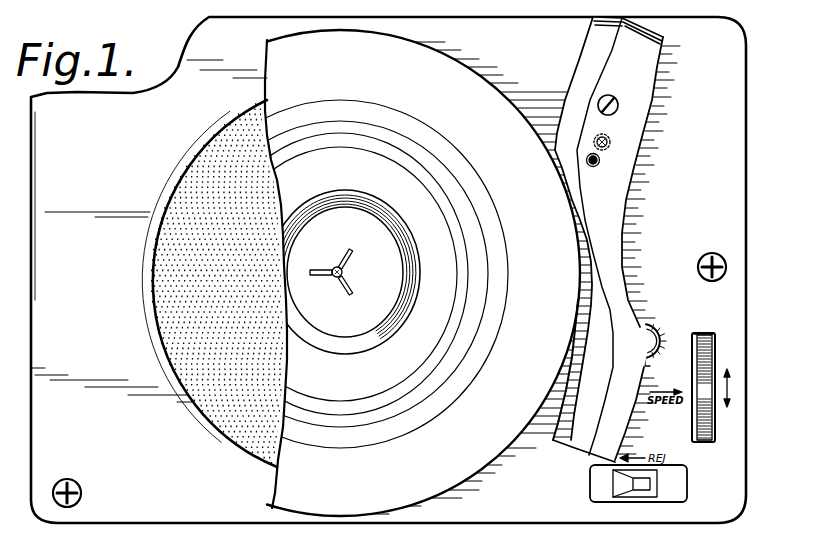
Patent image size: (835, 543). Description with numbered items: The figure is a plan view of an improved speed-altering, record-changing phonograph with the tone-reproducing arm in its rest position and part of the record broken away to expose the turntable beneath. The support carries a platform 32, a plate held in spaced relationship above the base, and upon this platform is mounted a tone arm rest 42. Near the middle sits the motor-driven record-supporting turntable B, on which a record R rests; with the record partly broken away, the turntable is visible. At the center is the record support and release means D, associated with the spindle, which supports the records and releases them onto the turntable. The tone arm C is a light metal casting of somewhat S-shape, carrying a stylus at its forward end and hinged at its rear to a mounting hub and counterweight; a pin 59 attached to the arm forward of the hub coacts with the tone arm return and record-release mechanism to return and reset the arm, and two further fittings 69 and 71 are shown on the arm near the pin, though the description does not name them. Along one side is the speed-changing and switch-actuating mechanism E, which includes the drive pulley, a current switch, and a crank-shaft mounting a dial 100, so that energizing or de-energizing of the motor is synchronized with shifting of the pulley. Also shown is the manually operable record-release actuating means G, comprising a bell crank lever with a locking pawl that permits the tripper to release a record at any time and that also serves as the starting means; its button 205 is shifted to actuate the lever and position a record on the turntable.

The platform 32 is at (108, 301).
The record-supporting turntable B is at (232, 267).
The record support and release means D is at (329, 258).
The record R is at (290, 468).
The tone-reproducing arm C is at (629, 192).
The knob 69 is at (610, 96).
The screw 71 is at (606, 137).
The pin 59 is at (592, 165).
The tone arm rest 42 is at (658, 332).
The dial 100 is at (700, 338).
The speed-changing and switch-actuating mechanism E is at (720, 436).
The manually operable record-release actuating means G is at (584, 491).
The button 205 is at (668, 481).